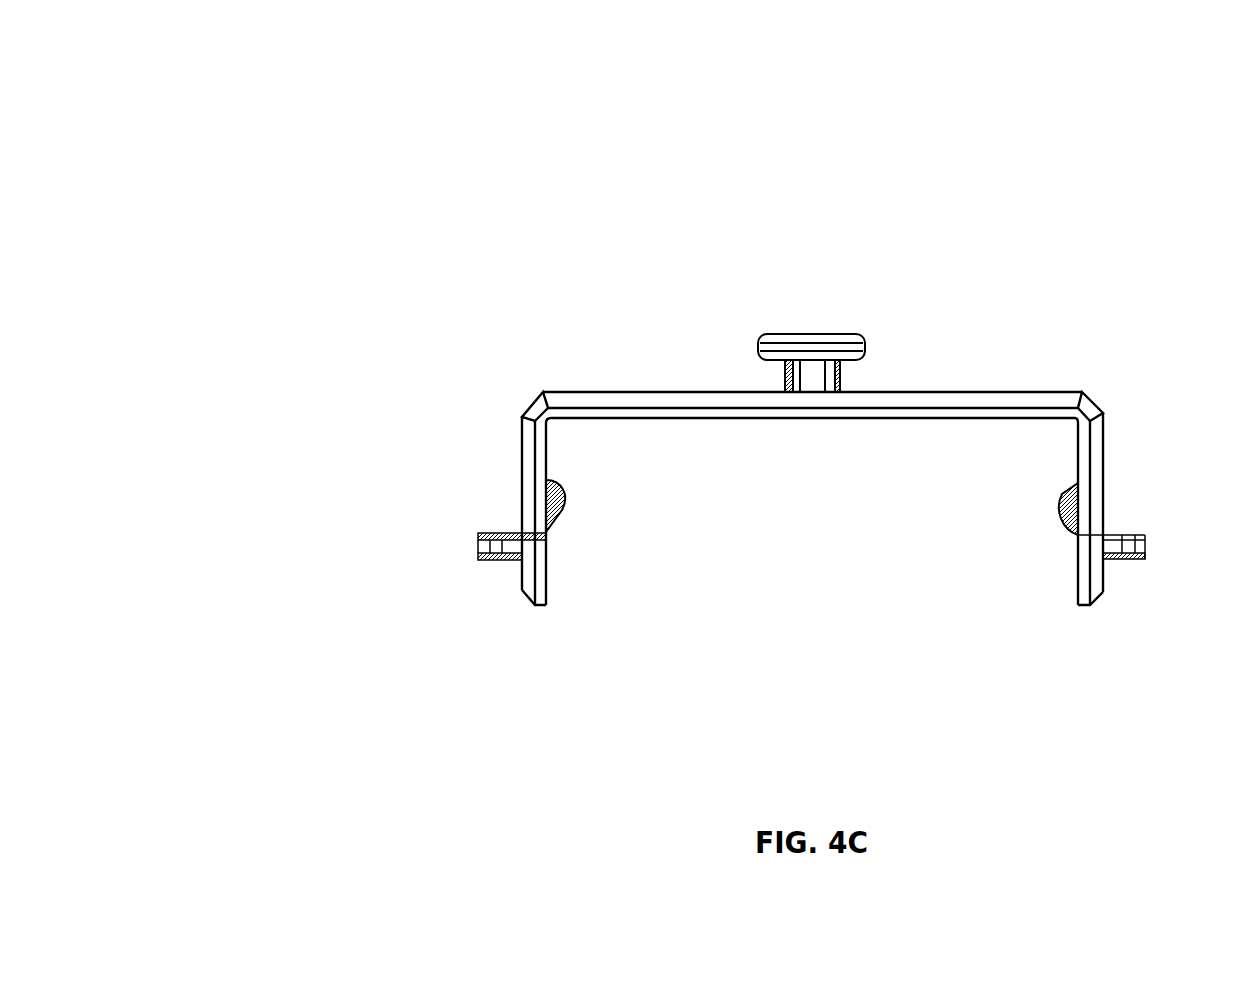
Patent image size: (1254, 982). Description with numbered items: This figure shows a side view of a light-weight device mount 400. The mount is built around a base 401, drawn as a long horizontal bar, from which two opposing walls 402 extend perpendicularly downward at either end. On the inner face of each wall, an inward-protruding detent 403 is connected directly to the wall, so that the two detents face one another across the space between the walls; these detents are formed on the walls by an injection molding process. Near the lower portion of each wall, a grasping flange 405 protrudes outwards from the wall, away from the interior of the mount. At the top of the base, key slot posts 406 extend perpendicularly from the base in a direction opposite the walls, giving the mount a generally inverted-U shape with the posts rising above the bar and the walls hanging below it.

The light-weight device mount 400 is at (288, 91).
The base 401 is at (797, 419).
The opposing walls 402 is at (540, 606).
The inward-protruding detents 403 is at (559, 518).
The grasping flanges 405 is at (478, 561).
The key slot posts 406 is at (813, 333).